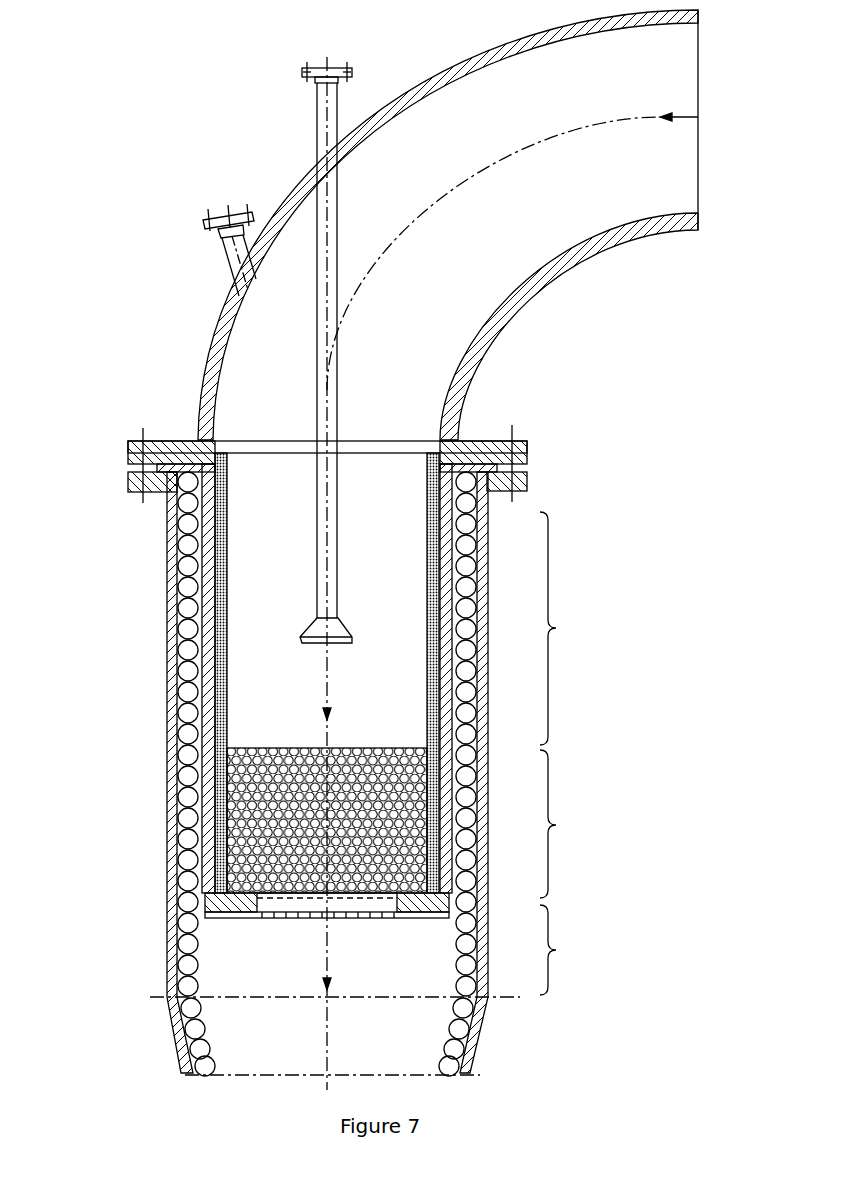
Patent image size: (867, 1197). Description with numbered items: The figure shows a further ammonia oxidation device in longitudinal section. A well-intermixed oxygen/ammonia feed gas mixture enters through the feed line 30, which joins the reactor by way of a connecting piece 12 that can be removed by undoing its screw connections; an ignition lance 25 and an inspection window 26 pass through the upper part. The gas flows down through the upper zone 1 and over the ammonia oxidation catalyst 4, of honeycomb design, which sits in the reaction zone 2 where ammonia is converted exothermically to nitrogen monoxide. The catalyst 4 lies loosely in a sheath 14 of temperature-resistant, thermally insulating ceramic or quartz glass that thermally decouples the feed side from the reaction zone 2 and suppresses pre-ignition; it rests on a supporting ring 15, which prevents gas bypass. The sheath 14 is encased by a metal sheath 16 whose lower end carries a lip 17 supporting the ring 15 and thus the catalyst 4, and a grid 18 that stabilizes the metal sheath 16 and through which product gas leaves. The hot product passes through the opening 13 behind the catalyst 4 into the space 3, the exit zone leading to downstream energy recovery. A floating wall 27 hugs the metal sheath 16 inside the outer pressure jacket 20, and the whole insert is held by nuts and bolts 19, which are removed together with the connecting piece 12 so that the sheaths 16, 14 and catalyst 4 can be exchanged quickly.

The upper chamber zone 1 is at (573, 628).
The reaction zone 2 is at (416, 823).
The space 3 is at (573, 950).
The ammonia oxidation catalyst 4 is at (347, 893).
The connecting piece 12 is at (567, 253).
The opening 13 is at (307, 902).
The sheath 14 is at (214, 634).
The supporting ring 15 is at (417, 920).
The metal sheath 16 is at (477, 515).
The lip 17 is at (412, 935).
The grid 18 is at (317, 917).
The nuts and bolts 19 is at (528, 440).
The pressure jacket 20 is at (170, 634).
The ignition lance 25 is at (337, 518).
The inspection window 26 is at (226, 246).
The floating wall 27 is at (183, 552).
The feed line 30 is at (509, 170).